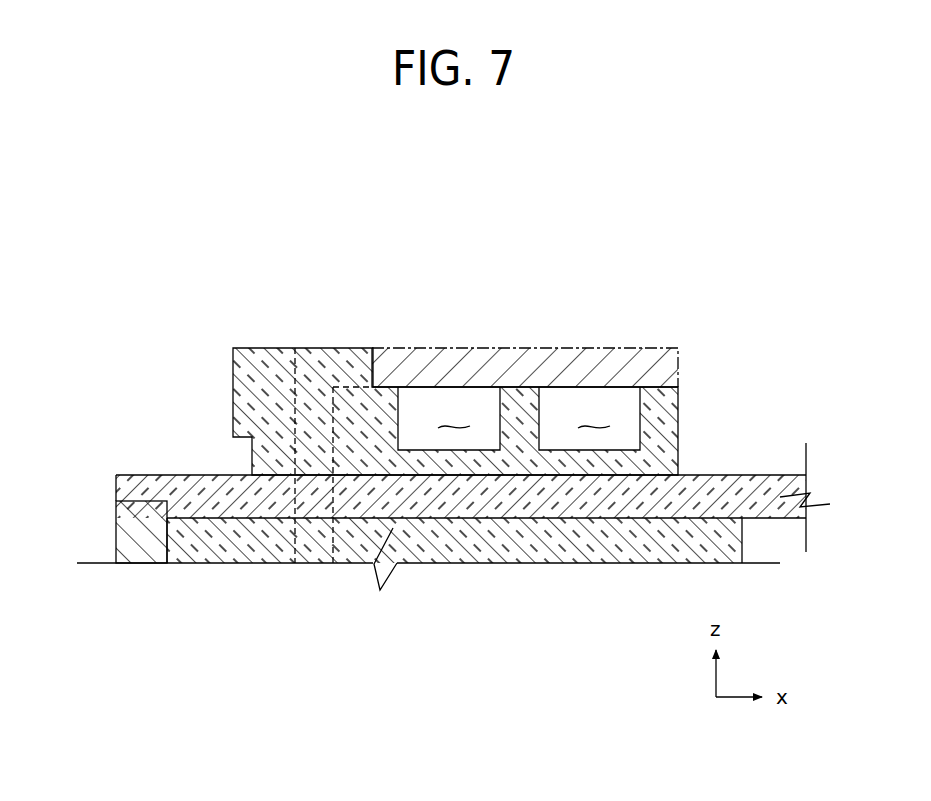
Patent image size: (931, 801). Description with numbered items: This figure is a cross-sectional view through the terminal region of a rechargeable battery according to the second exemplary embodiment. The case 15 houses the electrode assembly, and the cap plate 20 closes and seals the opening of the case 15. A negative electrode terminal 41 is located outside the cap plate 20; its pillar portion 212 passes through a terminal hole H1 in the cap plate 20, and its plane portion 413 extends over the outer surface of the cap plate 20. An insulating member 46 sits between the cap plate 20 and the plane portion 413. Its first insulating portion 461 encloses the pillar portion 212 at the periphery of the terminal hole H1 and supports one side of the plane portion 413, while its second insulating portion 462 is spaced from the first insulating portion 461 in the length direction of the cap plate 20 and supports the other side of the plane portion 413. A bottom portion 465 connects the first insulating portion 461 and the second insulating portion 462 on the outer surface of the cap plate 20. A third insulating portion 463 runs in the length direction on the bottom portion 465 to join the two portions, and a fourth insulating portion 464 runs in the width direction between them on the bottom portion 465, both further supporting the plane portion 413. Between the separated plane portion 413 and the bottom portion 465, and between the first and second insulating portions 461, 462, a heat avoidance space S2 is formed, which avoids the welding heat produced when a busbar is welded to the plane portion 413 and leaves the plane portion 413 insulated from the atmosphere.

The case 15 is at (137, 532).
The cap plate 20 is at (210, 500).
The pillar portion 212 is at (348, 500).
The terminal hole H1 is at (289, 500).
The negative electrode terminal 41 is at (525, 323).
The plane portion 413 is at (615, 348).
The insulating member 46 is at (452, 455).
The first insulating portion 461 is at (263, 413).
The second insulating portion 462 is at (663, 408).
The third insulating portion 463 is at (442, 403).
The fourth insulating portion 464 is at (517, 412).
The bottom portion 465 is at (560, 463).
The heat avoidance space S2 is at (452, 427).